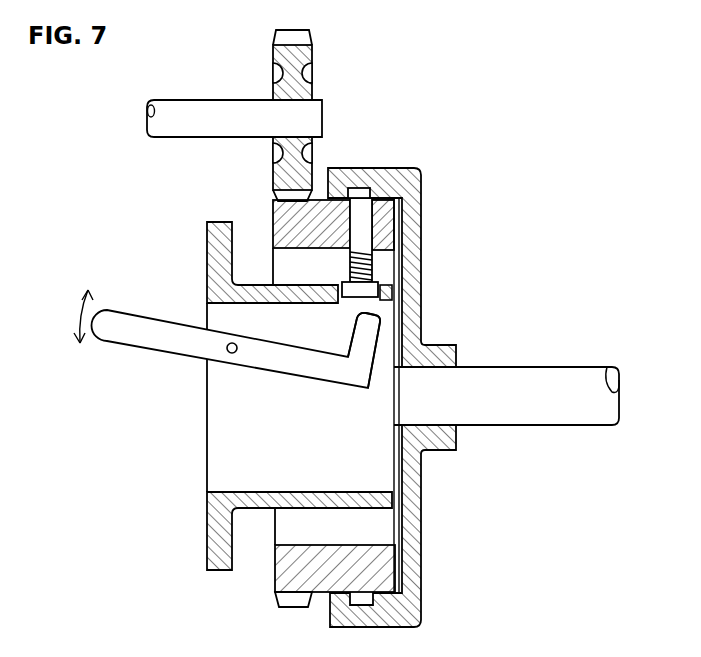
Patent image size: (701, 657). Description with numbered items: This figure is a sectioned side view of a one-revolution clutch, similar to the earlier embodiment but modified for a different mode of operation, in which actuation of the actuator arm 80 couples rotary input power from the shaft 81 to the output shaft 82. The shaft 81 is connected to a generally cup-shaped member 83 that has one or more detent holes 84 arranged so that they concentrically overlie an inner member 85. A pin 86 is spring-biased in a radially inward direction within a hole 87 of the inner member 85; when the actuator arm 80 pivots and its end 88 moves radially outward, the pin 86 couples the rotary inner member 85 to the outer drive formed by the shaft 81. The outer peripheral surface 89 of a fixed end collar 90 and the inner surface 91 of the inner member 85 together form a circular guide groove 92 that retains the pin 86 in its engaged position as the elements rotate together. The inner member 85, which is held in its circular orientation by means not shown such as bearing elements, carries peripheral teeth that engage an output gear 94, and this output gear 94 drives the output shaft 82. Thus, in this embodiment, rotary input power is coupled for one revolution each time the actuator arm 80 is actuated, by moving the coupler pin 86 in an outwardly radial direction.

The actuator arm 80 is at (131, 342).
The shaft 81 is at (512, 378).
The output shaft 82 is at (193, 105).
The cup-shaped member 83 is at (392, 180).
The detent hole 84 is at (353, 186).
The inner member 85 is at (292, 583).
The pin 86 is at (360, 235).
The hole 87 is at (375, 212).
The end 88 is at (361, 333).
The outer peripheral surface 89 is at (282, 277).
The fixed end collar 90 is at (213, 283).
The inner surface 91 is at (324, 543).
The circular guide groove 92 is at (385, 522).
The output gear 94 is at (303, 58).